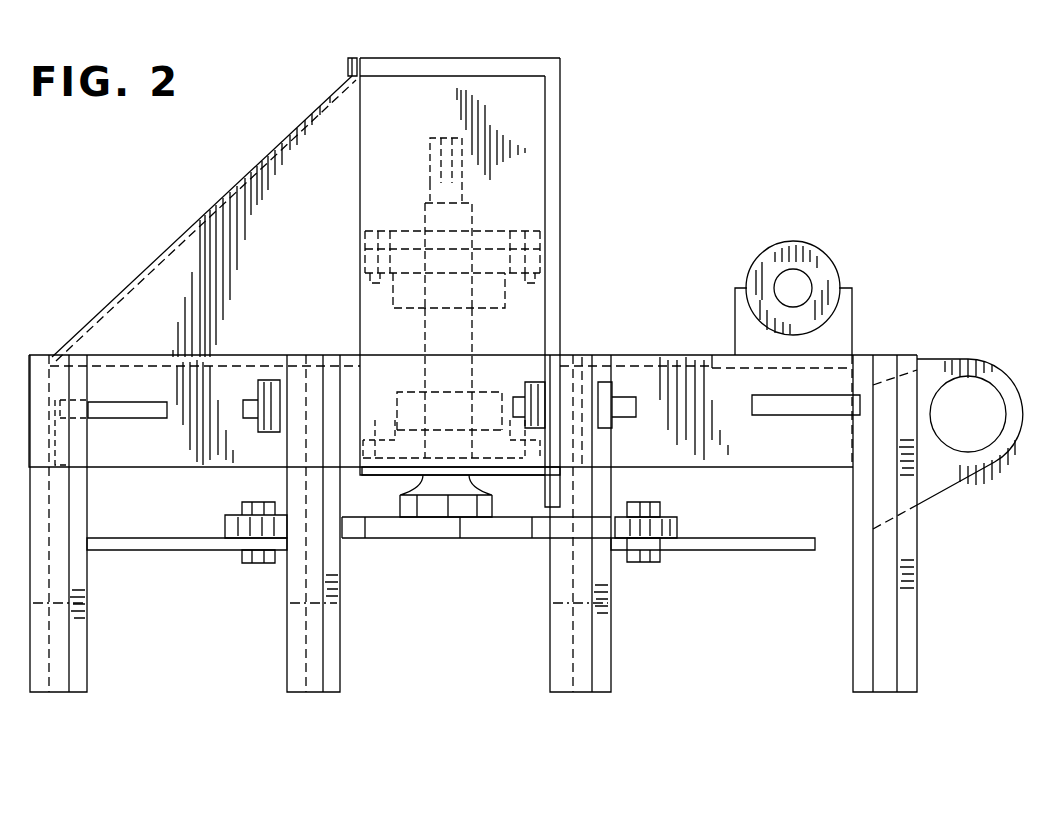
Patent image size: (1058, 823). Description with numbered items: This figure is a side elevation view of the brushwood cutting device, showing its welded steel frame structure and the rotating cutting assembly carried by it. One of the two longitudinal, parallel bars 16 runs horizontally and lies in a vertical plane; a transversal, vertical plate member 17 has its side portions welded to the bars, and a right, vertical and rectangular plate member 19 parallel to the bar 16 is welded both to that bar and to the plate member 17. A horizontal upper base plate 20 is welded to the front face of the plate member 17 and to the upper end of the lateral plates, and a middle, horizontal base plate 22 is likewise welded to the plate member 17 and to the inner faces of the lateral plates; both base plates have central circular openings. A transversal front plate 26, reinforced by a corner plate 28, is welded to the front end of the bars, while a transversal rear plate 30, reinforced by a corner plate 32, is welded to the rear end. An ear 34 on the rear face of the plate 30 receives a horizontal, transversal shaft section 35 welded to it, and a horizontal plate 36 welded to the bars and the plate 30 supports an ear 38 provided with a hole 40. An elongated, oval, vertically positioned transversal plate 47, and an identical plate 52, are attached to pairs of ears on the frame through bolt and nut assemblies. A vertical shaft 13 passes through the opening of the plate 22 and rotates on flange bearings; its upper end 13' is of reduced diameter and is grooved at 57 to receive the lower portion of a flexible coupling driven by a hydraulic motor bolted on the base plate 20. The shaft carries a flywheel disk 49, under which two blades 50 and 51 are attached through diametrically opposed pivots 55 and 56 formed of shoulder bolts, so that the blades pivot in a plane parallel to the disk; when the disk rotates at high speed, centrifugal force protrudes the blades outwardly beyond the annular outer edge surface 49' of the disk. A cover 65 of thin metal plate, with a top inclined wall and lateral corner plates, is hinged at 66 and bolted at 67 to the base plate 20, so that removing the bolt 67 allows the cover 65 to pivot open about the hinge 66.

The vertical shaft 13 is at (419, 330).
The upper end of the shaft 13' is at (415, 170).
The longitudinal bar 16 is at (660, 355).
The transversal vertical plate member 17 is at (558, 182).
The right vertical rectangular plate member 19 is at (535, 112).
The upper base plate 20 is at (512, 64).
The middle base plate 22 is at (540, 240).
The front plate 26 is at (75, 683).
The corner plate 28 is at (142, 420).
The rear plate 30 is at (905, 677).
The corner plate 32 is at (828, 400).
The ear 34 is at (945, 478).
The transversal shaft section 35 is at (990, 410).
The horizontal plate 36 is at (748, 362).
The ear 38 is at (845, 300).
The hole 40 is at (795, 282).
The transversal plate 47 is at (603, 680).
The flywheel disk 49 is at (476, 530).
The annular outer edge surface of the disk 49' is at (678, 512).
The blade 50 is at (178, 543).
The blade 51 is at (733, 545).
The plate 52 is at (330, 680).
The pivot 55 is at (258, 565).
The pivot 56 is at (640, 563).
The groove 57 is at (449, 165).
The cover 65 is at (181, 235).
The hinge 66 is at (52, 355).
The bolt 67 is at (348, 64).